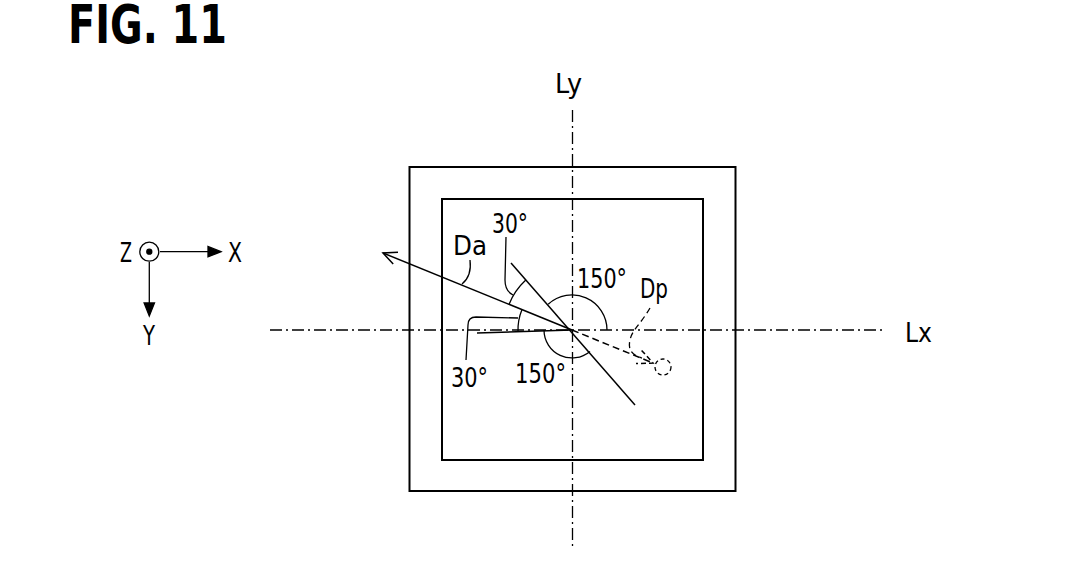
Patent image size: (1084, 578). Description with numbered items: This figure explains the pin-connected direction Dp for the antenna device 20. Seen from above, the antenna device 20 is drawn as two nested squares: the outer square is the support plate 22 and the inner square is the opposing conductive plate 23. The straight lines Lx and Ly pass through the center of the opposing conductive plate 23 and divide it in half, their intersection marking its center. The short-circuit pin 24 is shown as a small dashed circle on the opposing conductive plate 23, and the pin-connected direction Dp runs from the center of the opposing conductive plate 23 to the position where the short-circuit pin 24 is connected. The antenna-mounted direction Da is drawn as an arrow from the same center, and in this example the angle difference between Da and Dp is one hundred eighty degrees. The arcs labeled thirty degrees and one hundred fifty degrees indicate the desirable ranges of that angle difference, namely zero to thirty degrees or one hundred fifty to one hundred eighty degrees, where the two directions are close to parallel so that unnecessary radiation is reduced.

The antenna device 20 is at (470, 140).
The support plate 22 is at (737, 285).
The opposing conductive plate 23 is at (705, 215).
The short-circuit pin 24 is at (672, 370).